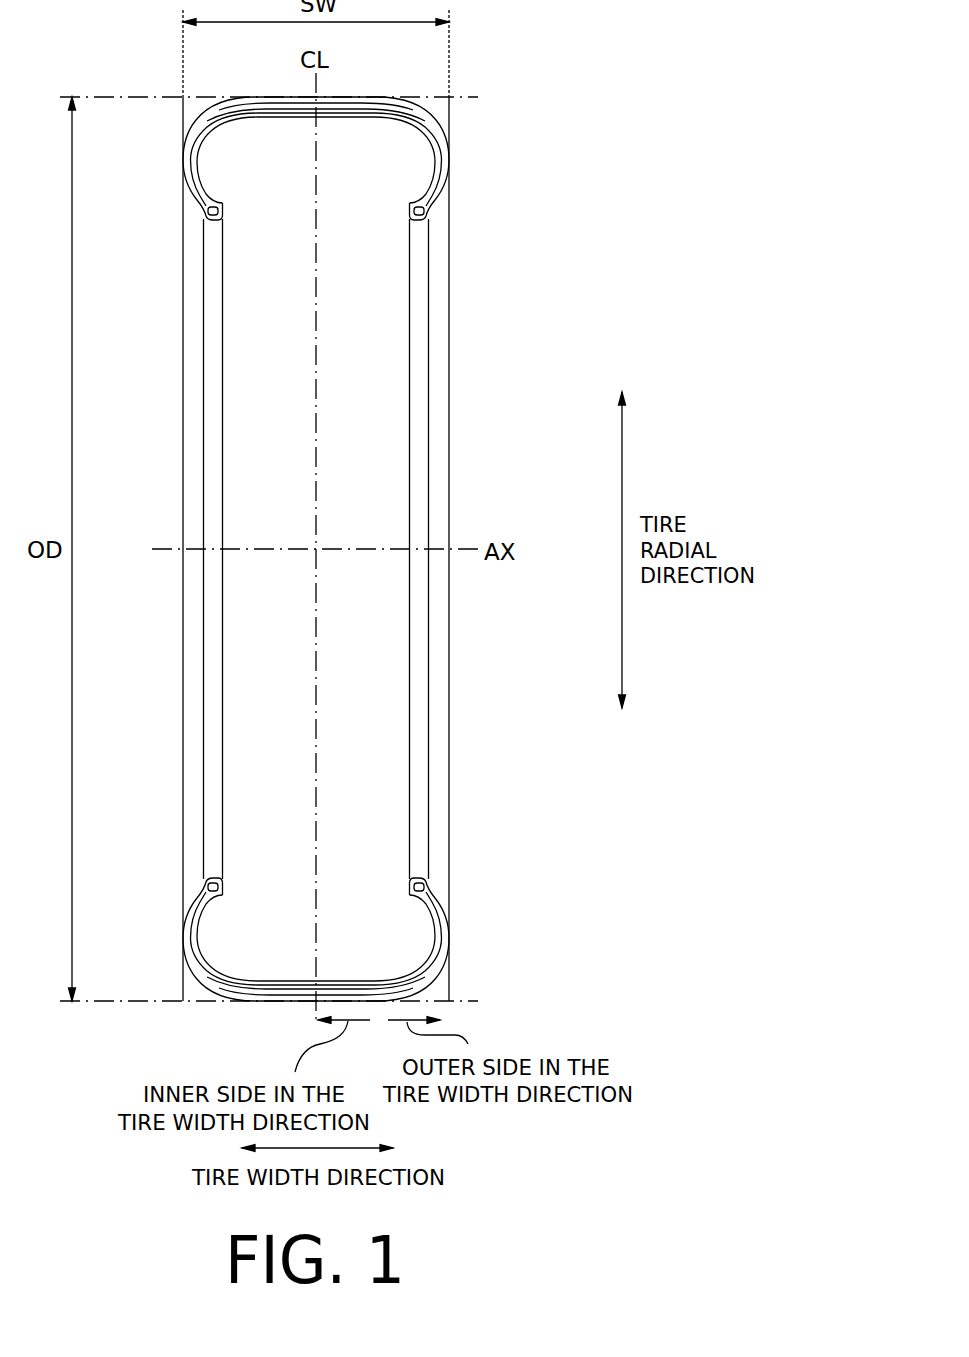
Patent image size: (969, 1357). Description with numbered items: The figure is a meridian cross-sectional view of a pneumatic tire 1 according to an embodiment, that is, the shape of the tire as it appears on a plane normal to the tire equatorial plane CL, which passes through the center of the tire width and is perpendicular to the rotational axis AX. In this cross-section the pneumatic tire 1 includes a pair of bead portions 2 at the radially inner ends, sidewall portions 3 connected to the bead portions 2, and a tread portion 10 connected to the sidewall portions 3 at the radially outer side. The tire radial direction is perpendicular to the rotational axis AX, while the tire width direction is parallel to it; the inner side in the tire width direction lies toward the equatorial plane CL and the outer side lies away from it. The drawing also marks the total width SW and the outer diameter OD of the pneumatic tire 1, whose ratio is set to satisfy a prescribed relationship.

The pneumatic tire 1 is at (553, 117).
The tread portion 10 is at (347, 97).
The sidewall portions 3 is at (183, 156).
The bead portions 2 is at (200, 203).